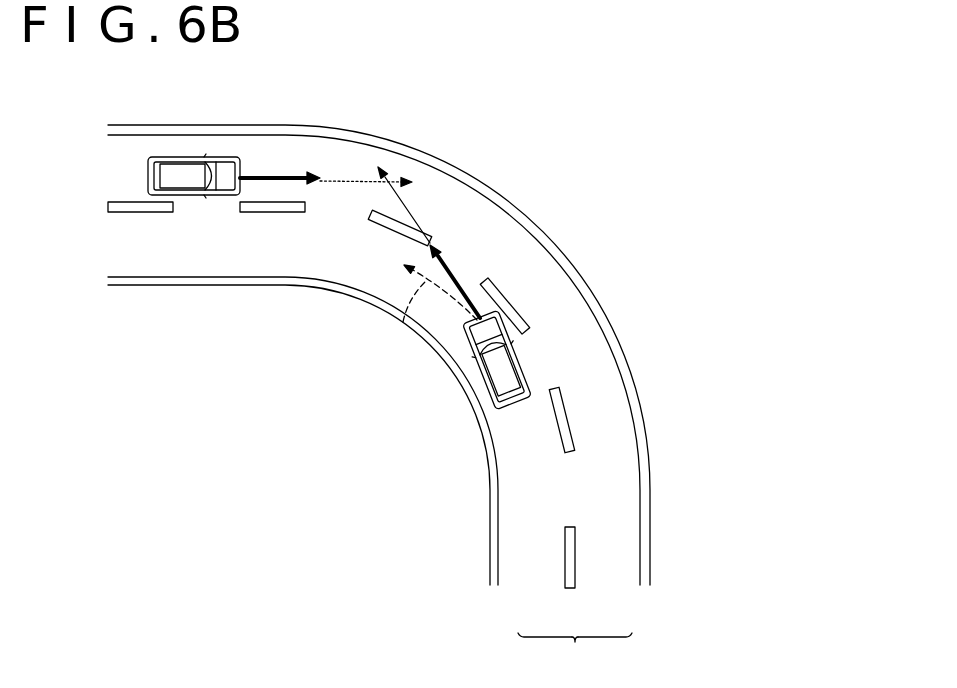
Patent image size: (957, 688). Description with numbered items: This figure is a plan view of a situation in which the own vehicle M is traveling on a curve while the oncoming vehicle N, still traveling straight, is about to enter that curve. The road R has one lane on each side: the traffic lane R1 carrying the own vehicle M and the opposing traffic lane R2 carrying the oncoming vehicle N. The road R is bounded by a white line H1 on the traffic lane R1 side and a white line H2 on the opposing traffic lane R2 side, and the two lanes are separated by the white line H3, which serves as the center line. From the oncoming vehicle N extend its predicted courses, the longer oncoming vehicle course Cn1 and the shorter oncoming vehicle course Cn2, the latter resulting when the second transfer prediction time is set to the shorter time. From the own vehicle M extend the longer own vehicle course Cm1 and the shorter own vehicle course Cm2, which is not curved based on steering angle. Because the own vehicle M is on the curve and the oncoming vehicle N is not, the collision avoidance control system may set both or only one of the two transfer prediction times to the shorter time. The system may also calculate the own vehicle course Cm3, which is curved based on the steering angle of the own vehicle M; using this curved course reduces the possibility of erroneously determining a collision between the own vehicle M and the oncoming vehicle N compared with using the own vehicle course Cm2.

The oncoming vehicle N is at (148, 178).
The own vehicle M is at (523, 407).
The oncoming vehicle course Cn1 is at (343, 180).
The oncoming vehicle course Cn2 is at (270, 177).
The own vehicle course Cm1 is at (406, 205).
The own vehicle course Cm2 is at (455, 271).
The own vehicle course Cm3 is at (403, 321).
The white line H1 is at (488, 548).
The white line H2 is at (650, 560).
The white line H3 is at (568, 410).
The traffic lane R1 is at (538, 578).
The opposing traffic lane R2 is at (610, 578).
The road R is at (575, 656).